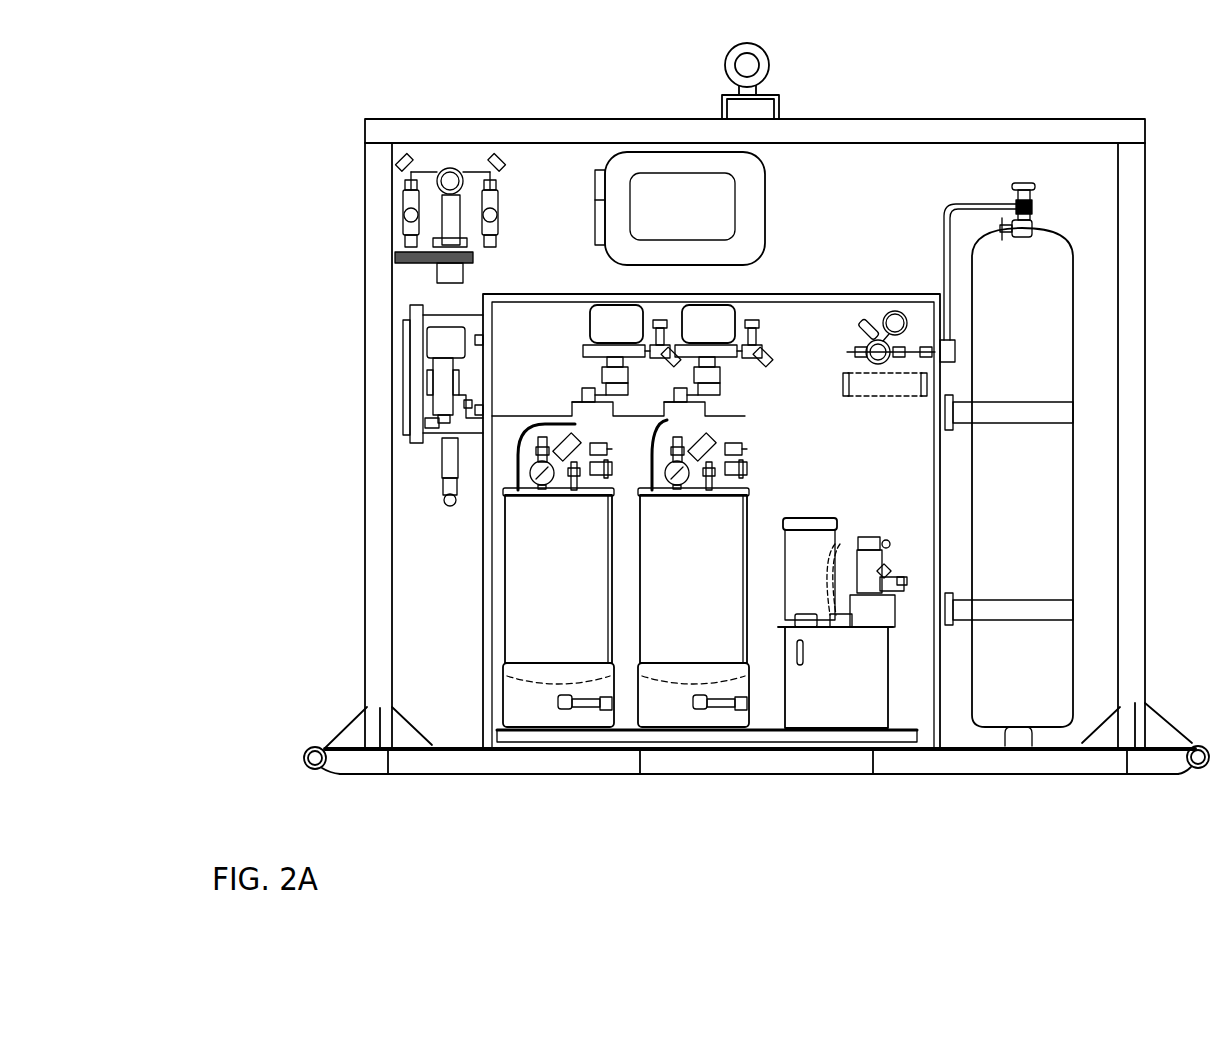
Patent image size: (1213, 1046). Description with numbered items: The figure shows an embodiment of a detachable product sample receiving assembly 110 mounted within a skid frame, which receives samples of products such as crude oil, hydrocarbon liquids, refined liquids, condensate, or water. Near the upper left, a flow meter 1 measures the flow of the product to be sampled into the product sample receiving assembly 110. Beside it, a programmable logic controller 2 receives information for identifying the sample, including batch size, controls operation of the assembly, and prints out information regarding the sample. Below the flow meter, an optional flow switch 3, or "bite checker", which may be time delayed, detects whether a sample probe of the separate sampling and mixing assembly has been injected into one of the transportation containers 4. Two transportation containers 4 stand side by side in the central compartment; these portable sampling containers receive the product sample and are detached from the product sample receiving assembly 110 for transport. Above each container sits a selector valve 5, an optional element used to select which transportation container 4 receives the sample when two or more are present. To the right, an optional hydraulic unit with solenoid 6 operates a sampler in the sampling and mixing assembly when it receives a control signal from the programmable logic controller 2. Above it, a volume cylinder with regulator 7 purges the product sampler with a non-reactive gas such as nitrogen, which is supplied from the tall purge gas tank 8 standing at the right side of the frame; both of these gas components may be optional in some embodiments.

The product sample receiving assembly 110 is at (322, 53).
The flow meter 1 is at (451, 213).
The programmable logic controller 2 is at (680, 208).
The flow switch 3 is at (445, 377).
The transportation containers 4 is at (626, 573).
The selector valve 5 is at (672, 353).
The hydraulic unit with solenoid 6 is at (842, 623).
The volume cylinder with regulator 7 is at (880, 383).
The purge gas tank 8 is at (1009, 464).